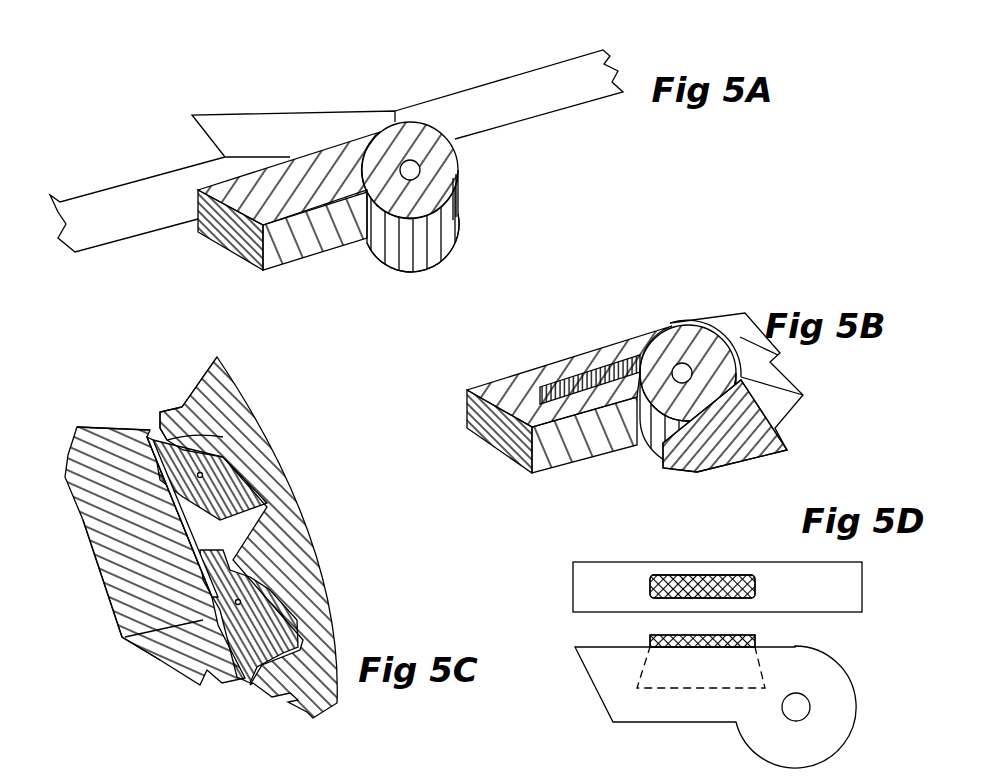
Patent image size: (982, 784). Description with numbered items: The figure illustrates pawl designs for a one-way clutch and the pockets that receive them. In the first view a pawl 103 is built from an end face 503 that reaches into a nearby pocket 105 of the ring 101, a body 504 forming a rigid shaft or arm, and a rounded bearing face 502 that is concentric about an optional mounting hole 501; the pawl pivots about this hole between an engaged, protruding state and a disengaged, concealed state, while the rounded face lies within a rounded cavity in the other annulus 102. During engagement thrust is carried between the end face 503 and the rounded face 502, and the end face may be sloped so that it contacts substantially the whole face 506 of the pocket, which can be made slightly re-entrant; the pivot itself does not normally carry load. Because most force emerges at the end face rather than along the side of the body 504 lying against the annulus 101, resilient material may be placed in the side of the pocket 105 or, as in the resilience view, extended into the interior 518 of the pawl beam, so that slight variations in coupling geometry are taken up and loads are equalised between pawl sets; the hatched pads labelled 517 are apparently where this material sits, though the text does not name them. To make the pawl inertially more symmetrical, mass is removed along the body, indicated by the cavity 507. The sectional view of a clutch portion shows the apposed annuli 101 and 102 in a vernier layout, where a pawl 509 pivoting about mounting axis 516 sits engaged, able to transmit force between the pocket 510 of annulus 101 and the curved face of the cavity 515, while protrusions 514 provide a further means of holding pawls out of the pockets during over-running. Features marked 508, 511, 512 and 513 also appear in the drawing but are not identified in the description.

In FIG. 5A, the annulus 101 is at (540, 44).
In FIG. 5C, the annulus 101 is at (123, 549).
In FIG. 5C, the annulus 102 is at (271, 570).
In FIG. 5A, the pawl 103 is at (413, 262).
In FIG. 5A, the pocket 105 is at (268, 113).
In FIG. 5A, the mounting hole 501 is at (418, 170).
In FIG. 5A, the rounded bearing face 502 is at (460, 197).
In FIG. 5D, the rounded bearing face 502 is at (826, 647).
In FIG. 5A, the end face 503 is at (222, 236).
In FIG. 5B, the end face 503 is at (493, 436).
In FIG. 5A, the body 504 is at (305, 166).
In FIG. 5A, the face of the pocket 506 is at (172, 165).
In FIG. 5B, the cavity 507 is at (572, 383).
In FIG. 5B, the retaining clip 508 is at (772, 356).
In FIG. 5C, the retaining clip 508 is at (263, 437).
In FIG. 5C, the pawl 509 is at (178, 412).
In FIG. 5C, the pocket 510 is at (113, 433).
In FIG. 5C, the upper insert 511 is at (283, 543).
In FIG. 5C, the rail 512 is at (228, 680).
In FIG. 5C, the inner surface 513 is at (183, 552).
In FIG. 5C, the protrusions 514 is at (125, 637).
In FIG. 5C, the cavity 515 is at (267, 513).
In FIG. 5C, the mounting axis 516 is at (223, 437).
In FIG. 5D, the adhesive pad 517 is at (683, 574).
In FIG. 5D, the interior of the pawl beam 518 is at (665, 680).